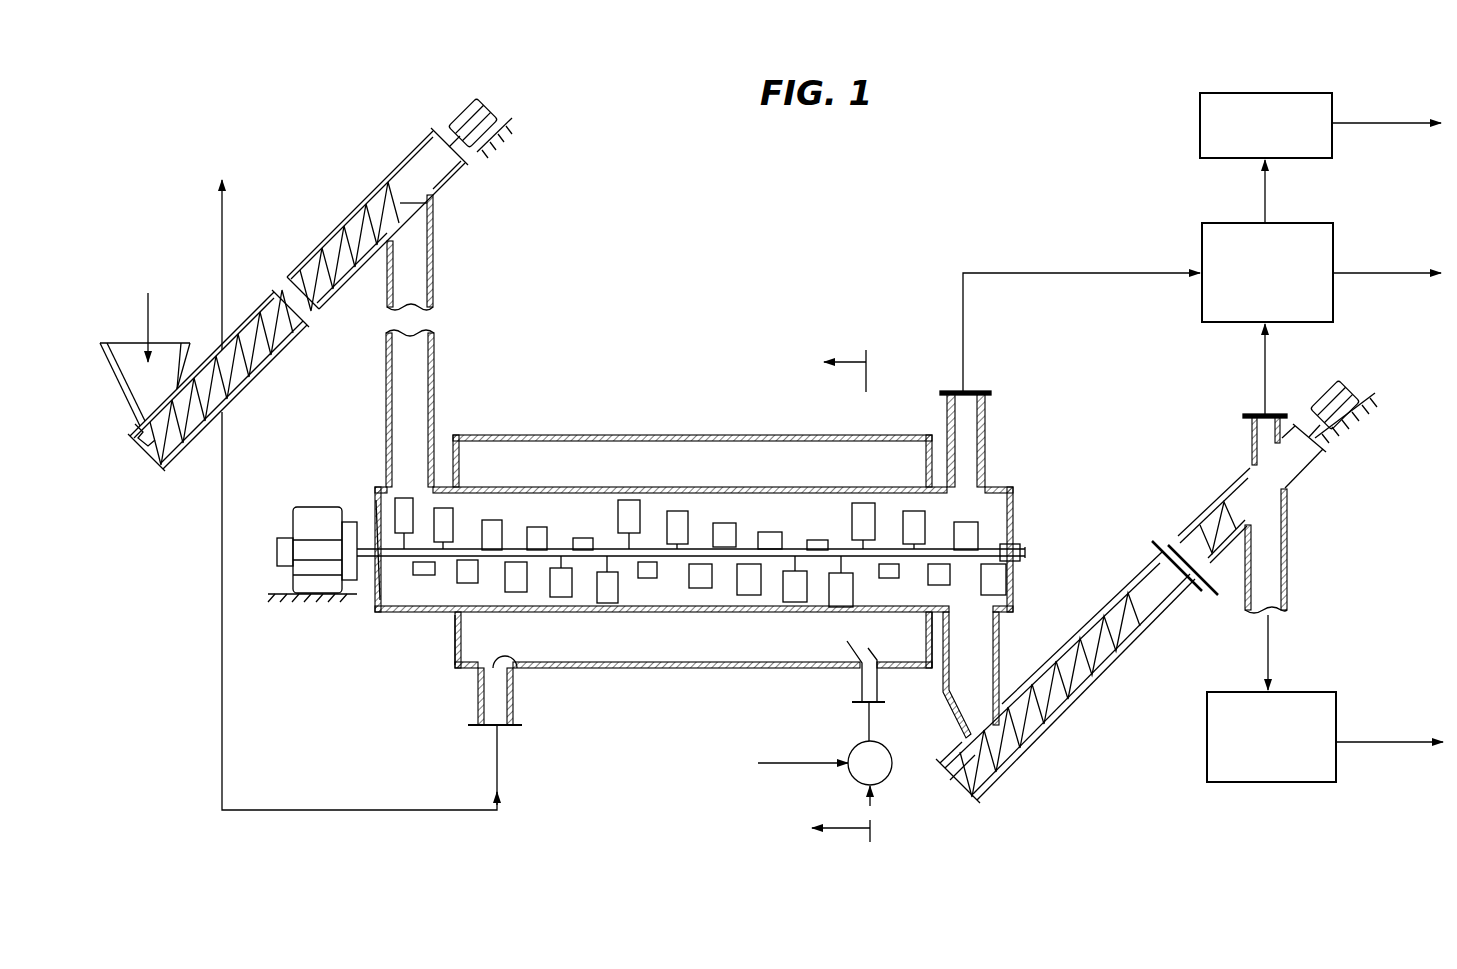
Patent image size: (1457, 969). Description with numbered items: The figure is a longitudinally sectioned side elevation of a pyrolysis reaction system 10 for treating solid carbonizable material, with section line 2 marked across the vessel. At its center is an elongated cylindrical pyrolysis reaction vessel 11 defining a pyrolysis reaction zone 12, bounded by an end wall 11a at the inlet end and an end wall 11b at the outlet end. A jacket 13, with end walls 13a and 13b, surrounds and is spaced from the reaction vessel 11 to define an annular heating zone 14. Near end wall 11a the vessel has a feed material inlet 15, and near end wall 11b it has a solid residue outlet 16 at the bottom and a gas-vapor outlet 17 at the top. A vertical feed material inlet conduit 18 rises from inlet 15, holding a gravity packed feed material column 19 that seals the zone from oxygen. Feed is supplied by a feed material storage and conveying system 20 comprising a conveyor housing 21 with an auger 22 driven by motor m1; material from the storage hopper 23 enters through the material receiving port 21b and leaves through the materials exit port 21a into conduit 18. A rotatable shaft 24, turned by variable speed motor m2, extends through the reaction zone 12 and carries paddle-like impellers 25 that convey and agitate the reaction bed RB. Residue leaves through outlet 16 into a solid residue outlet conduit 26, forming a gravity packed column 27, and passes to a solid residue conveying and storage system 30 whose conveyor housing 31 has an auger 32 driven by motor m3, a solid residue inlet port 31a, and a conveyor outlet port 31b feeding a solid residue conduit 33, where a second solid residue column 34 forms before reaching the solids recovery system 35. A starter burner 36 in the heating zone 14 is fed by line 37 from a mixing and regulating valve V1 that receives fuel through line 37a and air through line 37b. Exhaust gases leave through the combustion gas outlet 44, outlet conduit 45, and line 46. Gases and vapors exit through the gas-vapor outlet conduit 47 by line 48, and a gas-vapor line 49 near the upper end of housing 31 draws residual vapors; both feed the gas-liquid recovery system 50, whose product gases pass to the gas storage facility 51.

The pyrolysis reaction system 10 is at (579, 403).
The pyrolysis reaction vessel 11 is at (581, 487).
The end wall 11a is at (375, 500).
The end wall 11b is at (1022, 552).
The pyrolysis reaction zone 12 is at (807, 522).
The jacket 13 is at (605, 436).
The end wall 13a is at (936, 650).
The end wall 13b is at (457, 640).
The annular heating zone 14 is at (736, 477).
The feed material inlet 15 is at (395, 480).
The solid residue outlet 16 is at (980, 610).
The gas-vapor outlet 17 is at (975, 487).
The feed material inlet conduit 18 is at (434, 380).
The feed material column 19 is at (412, 355).
The feed material storage and conveying system 20 is at (295, 260).
The feed material conveyor housing 21 is at (286, 331).
The materials exit port 21a is at (412, 218).
The material receiving port 21b is at (150, 417).
The auger 22 is at (333, 250).
The material storage hopper 23 is at (94, 352).
The rotatable shaft 24 is at (1002, 545).
The paddle-like impellers 25 is at (542, 532).
The solid residue outlet conduit 26 is at (996, 655).
The gravity packed column 27 is at (972, 690).
The solid residue conveying and storage system 30 is at (1186, 614).
The solid residue conveyor housing 31 is at (1180, 538).
The solid residue inlet port 31a is at (968, 735).
The conveyor outlet port 31b is at (1275, 490).
The auger 32 is at (1106, 652).
The solid residue conduit 33 is at (1288, 545).
The second solid residue column 34 is at (1270, 582).
The solids recovery system 35 is at (1296, 690).
The starter burner 36 is at (860, 690).
The line 37 is at (868, 728).
The line 37a is at (792, 768).
The line 37b is at (873, 802).
The combustion gas outlet 44 is at (518, 666).
The outlet conduit 45 is at (478, 700).
The line 46 is at (325, 810).
The gas-vapor outlet conduit 47 is at (986, 415).
The line 48 is at (1081, 332).
The gas-vapor line 49 is at (1262, 378).
The gas-liquid recovery system 50 is at (1233, 224).
The gas storage facility 51 is at (1200, 135).
The reaction bed RB is at (692, 602).
The motor m1 is at (465, 105).
The variable speed motor m2 is at (300, 520).
The motor m3 is at (1336, 392).
The mixing and regulating valve V1 is at (870, 763).
The section line 2- 2 is at (831, 596).